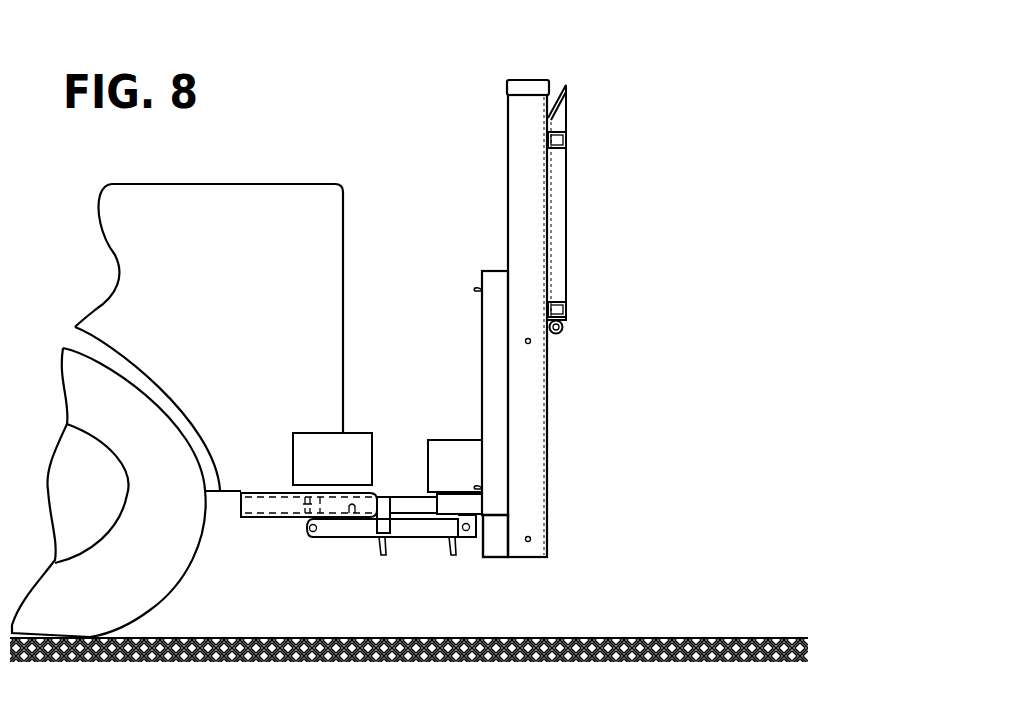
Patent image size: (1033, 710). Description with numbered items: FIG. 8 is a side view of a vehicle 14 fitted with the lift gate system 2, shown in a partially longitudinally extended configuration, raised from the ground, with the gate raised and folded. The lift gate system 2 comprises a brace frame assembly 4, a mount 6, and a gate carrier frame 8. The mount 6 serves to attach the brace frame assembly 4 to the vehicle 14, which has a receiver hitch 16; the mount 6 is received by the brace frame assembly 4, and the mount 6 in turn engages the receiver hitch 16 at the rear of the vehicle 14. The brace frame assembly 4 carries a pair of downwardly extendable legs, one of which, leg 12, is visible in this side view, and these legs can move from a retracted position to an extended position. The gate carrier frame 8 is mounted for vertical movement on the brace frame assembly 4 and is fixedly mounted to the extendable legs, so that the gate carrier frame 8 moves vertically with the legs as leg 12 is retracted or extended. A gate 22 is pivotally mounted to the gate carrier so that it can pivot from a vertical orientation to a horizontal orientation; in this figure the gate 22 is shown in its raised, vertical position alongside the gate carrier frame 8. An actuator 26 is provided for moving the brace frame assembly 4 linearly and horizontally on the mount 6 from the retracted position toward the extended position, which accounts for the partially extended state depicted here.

The lift gate system 2 is at (592, 75).
The brace frame assembly 4 is at (480, 357).
The mount 6 is at (402, 494).
The gate carrier frame 8 is at (505, 196).
The downwardly extendable leg 12 is at (497, 542).
The vehicle 14 is at (292, 184).
The receiver hitch 16 is at (262, 517).
The gate 22 is at (566, 215).
The actuator 26 is at (345, 537).